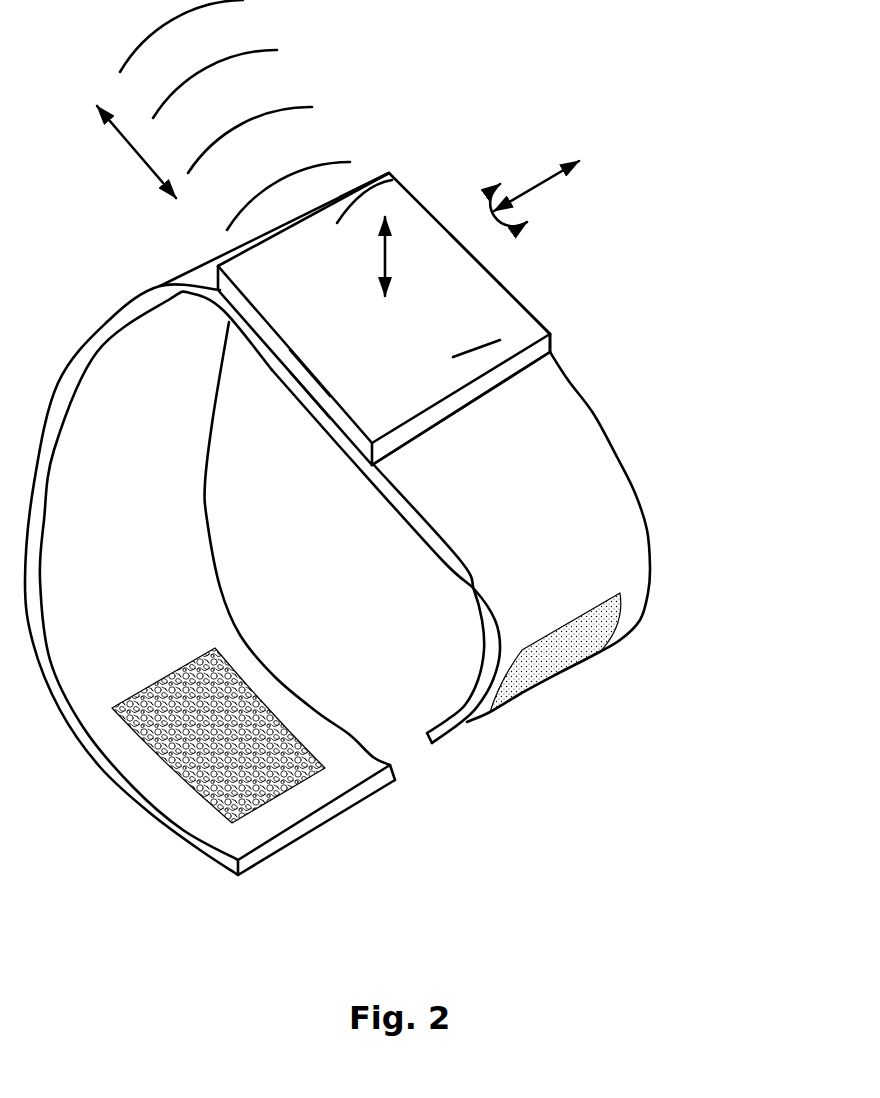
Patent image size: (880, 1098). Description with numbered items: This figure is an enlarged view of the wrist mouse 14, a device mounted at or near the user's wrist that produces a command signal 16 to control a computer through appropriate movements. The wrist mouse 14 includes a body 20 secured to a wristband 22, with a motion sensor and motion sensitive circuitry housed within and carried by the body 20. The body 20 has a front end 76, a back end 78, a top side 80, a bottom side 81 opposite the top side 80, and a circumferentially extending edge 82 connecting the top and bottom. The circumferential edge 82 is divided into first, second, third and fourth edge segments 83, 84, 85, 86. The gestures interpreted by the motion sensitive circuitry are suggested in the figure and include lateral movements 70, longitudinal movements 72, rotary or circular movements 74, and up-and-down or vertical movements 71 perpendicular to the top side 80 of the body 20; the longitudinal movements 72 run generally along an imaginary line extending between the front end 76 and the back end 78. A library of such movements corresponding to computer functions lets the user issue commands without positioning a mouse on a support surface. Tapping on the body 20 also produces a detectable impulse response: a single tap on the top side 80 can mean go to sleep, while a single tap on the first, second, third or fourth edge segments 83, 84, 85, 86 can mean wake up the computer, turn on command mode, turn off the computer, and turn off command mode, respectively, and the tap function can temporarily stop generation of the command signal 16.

The wrist mouse 14 is at (675, 108).
The command signal 16 is at (270, 52).
The body 20 is at (508, 277).
The band 22 is at (610, 503).
The lateral movements 70 is at (140, 163).
The up-and-down or vertical movements 71 is at (387, 255).
The longitudinal movements 72 is at (540, 190).
The rotary or circular movements 74 is at (528, 180).
The front end 76 is at (392, 180).
The back end 78 is at (453, 357).
The top side 80 is at (513, 320).
The bottom side 81 is at (333, 427).
The circumferentially extending edge 82 is at (552, 352).
The first edge segment 83 is at (490, 265).
The second edge segment 84 is at (367, 178).
The third edge segment 85 is at (318, 393).
The fourth edge segment 86 is at (457, 403).